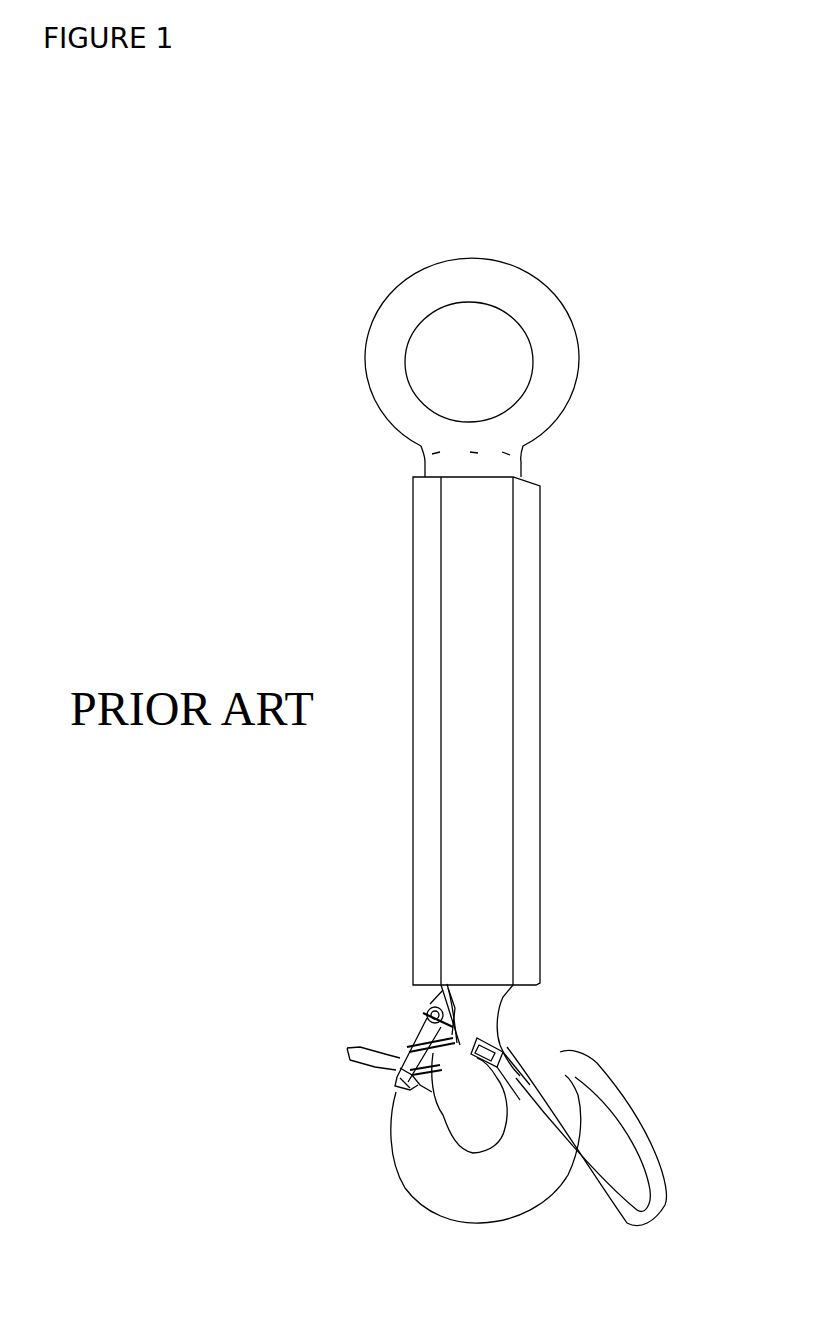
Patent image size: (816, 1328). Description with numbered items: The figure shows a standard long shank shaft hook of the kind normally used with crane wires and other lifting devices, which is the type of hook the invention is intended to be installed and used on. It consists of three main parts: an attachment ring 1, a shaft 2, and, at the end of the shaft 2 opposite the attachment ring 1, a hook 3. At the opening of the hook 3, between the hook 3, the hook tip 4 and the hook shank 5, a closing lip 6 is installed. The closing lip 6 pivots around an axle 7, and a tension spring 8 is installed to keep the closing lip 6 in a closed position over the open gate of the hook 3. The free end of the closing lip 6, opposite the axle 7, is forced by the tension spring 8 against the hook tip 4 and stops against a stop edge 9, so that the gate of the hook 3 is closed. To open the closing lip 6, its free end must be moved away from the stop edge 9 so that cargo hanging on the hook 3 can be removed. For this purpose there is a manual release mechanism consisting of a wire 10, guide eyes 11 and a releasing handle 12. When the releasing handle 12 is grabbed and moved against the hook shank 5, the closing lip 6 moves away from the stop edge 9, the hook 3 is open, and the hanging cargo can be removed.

The attachment ring 1 is at (557, 314).
The shaft 2 is at (497, 684).
The hook 3 is at (481, 1191).
The hook tip 4 is at (340, 1056).
The hook shank 5 is at (501, 1008).
The closing lip 6 is at (393, 1039).
The axle 7 is at (411, 1001).
The tension spring 8 is at (425, 982).
The stop edge 9 is at (385, 1071).
The wire 10 is at (435, 1060).
The guide eyes 11 is at (494, 1052).
The releasing handle 12 is at (666, 1152).